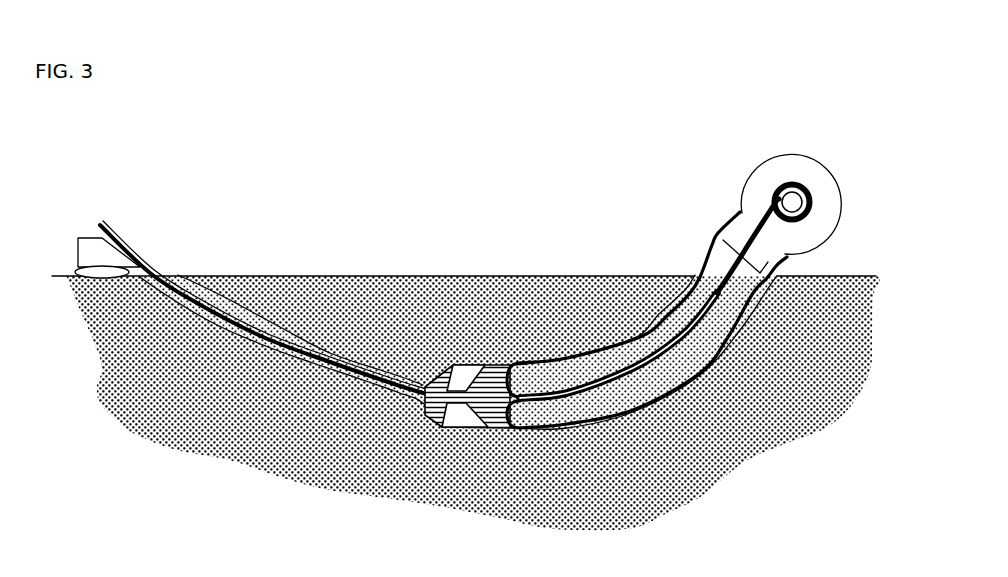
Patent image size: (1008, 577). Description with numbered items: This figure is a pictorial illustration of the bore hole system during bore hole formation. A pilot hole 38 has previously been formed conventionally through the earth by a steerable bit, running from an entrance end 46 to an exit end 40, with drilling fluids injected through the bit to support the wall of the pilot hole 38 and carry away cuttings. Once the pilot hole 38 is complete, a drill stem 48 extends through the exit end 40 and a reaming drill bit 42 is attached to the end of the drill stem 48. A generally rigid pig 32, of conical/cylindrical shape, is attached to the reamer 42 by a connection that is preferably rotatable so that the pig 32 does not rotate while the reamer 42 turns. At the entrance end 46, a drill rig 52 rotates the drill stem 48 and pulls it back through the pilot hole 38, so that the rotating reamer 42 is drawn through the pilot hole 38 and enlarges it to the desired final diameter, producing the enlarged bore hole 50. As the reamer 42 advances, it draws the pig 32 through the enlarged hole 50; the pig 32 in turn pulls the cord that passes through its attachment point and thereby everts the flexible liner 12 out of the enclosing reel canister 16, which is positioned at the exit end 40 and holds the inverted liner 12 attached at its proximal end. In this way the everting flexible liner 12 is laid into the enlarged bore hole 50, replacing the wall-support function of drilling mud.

The flexible liner 12 is at (707, 230).
The reel canister 16 is at (819, 157).
The pig 32 is at (497, 375).
The pilot hole 38 is at (300, 342).
The exit end 40 is at (687, 270).
The reaming drill bit 42 is at (459, 311).
The entrance end 46 is at (178, 270).
The drill stem 48 is at (103, 227).
The enlarged bore hole 50 is at (467, 372).
The drill rig 52 is at (93, 250).